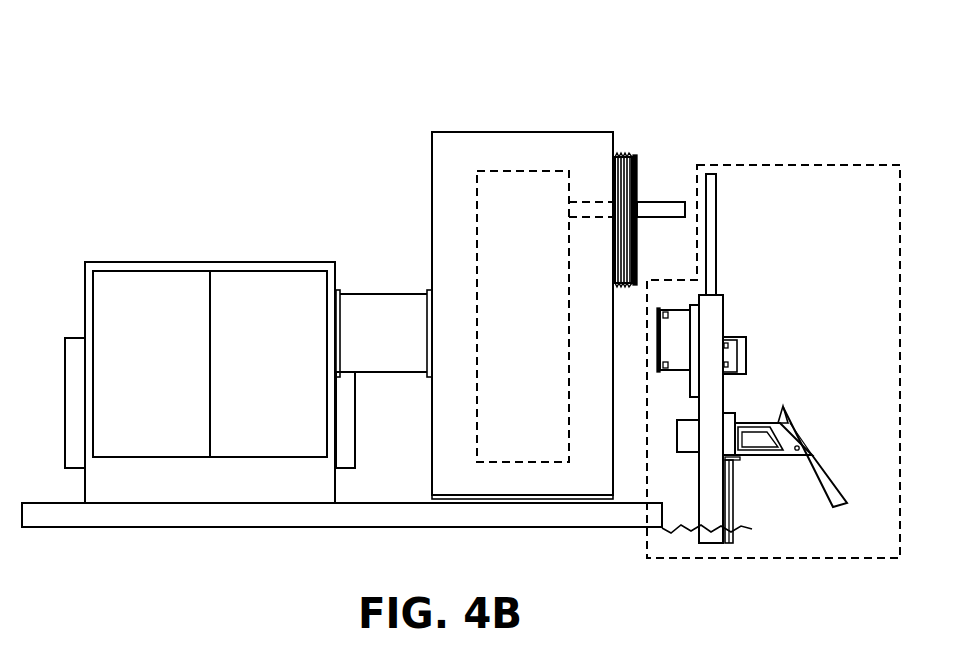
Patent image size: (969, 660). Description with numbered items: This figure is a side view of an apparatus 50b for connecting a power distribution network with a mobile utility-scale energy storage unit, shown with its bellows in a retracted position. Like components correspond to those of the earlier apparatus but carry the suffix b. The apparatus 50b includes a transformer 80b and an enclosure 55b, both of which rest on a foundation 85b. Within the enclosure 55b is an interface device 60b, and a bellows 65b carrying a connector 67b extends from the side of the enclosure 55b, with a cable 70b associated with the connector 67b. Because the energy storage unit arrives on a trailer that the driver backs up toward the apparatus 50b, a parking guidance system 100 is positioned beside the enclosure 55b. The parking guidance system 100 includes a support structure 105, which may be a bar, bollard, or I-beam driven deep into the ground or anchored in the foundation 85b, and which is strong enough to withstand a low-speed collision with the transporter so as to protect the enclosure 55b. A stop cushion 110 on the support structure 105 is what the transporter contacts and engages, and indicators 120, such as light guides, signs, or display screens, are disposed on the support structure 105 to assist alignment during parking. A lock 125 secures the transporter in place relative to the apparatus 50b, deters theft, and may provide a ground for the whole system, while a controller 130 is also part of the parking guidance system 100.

The apparatus 50b is at (206, 94).
The foundation 85b is at (66, 528).
The transformer 80b is at (153, 262).
The enclosure 55b is at (509, 132).
The interface device 60b is at (545, 331).
The bellows 65b is at (622, 155).
The connector 67b is at (638, 165).
The cable 70b is at (665, 200).
The parking guidance system 100 is at (833, 163).
The support structure 105 is at (702, 507).
The stop cushion 110 is at (747, 360).
The indicators 120 is at (713, 205).
The lock 125 is at (798, 432).
The controller 130 is at (682, 322).